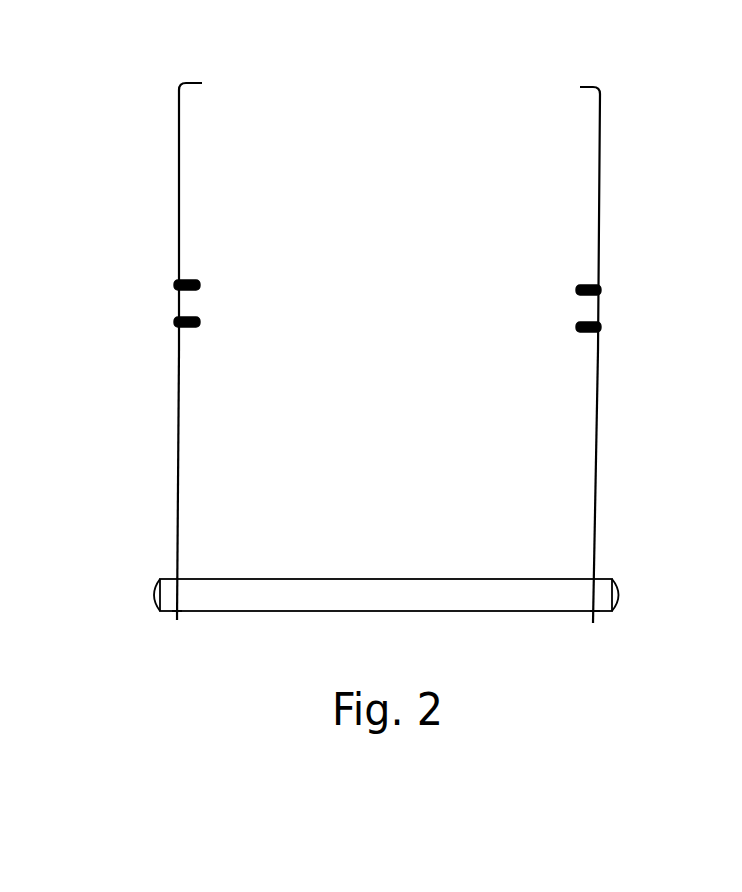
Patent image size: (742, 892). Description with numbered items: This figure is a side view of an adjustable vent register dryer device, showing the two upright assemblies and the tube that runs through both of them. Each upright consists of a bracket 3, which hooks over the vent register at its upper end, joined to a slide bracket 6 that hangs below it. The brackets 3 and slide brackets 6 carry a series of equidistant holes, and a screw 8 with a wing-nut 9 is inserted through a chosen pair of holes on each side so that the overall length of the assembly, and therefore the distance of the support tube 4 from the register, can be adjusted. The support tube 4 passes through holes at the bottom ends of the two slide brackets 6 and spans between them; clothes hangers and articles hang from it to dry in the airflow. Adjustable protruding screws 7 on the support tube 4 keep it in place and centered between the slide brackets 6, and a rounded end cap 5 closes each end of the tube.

The bracket 3 is at (162, 193).
The support tube 4 is at (543, 622).
The rounded end cap 5 is at (138, 593).
The slide bracket 6 is at (164, 440).
The adjustable protruding screw 7 is at (165, 615).
The screw 8 is at (170, 322).
The wing-nut 9 is at (205, 282).